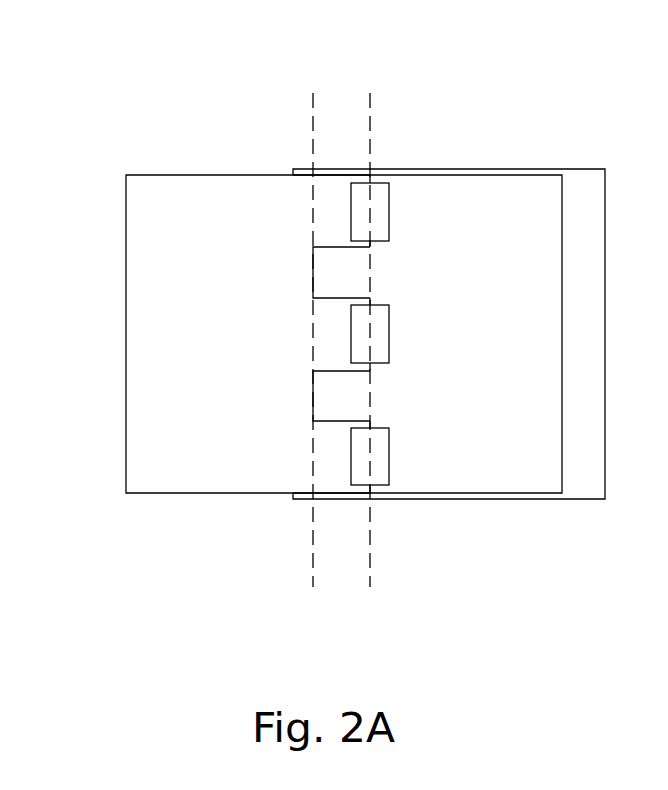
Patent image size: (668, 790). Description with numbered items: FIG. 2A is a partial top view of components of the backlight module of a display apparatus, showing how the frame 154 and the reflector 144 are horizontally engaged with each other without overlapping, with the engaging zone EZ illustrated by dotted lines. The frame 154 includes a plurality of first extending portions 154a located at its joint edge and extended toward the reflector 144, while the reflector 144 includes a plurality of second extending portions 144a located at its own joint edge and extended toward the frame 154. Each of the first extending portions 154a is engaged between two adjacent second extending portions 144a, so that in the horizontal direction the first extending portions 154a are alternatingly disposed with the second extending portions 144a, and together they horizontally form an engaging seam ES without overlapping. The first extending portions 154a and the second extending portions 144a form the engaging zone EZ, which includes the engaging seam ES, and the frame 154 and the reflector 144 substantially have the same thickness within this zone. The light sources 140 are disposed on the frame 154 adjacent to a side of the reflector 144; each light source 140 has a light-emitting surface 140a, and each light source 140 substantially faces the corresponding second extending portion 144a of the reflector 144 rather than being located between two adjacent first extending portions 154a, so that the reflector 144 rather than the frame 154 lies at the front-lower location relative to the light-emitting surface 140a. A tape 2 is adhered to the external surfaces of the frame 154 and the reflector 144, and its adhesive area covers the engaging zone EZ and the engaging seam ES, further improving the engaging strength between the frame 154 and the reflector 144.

The tape 2 is at (582, 190).
The reflector 144 is at (193, 315).
The second extending portions 144a is at (332, 450).
The frame 154 is at (489, 190).
The first extending portions 154a is at (327, 397).
The light sources 140 is at (383, 473).
The light-emitting surface 140a is at (350, 468).
The engaging seam ES is at (313, 271).
The engaging zone EZ is at (313, 82).